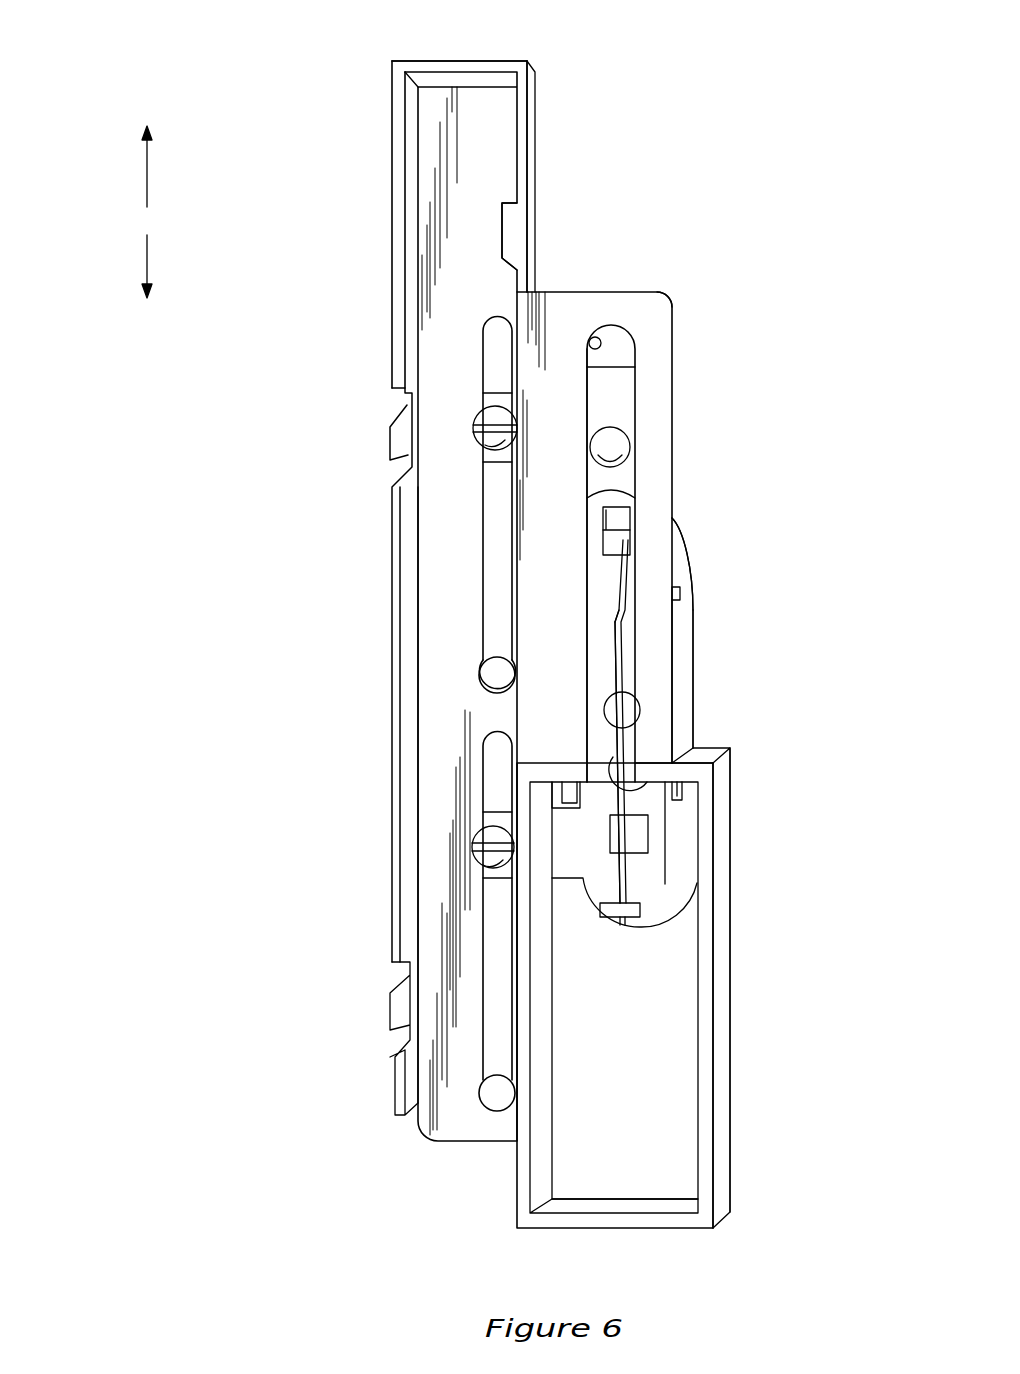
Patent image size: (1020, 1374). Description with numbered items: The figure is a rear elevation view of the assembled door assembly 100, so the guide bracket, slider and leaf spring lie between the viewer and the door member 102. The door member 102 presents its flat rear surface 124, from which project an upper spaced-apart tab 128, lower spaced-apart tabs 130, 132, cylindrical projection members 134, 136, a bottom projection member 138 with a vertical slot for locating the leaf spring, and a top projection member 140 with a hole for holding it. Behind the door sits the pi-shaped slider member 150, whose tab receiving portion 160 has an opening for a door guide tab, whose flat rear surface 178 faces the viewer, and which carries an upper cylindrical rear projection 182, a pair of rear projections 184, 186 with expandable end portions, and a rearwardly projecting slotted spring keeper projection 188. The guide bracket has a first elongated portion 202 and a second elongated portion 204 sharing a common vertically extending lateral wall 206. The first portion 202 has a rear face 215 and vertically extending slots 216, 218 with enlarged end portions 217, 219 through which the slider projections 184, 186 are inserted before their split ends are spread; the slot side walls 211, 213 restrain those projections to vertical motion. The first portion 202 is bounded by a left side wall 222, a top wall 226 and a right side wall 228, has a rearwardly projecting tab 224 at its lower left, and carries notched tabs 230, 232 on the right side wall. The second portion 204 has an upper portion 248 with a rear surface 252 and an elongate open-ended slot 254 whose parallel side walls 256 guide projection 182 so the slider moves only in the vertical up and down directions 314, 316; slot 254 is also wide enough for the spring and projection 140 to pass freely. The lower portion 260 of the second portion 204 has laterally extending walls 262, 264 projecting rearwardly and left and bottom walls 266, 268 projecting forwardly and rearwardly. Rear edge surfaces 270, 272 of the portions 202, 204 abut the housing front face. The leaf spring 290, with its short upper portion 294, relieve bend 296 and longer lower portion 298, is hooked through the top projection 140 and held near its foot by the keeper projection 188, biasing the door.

The door assembly 100 is at (262, 32).
The door member 102 is at (684, 512).
The flat rear surface 124 is at (686, 640).
The upper spaced apart tab 128 is at (690, 587).
The lower spaced apart tab 130 is at (592, 918).
The lower spaced apart tab 132 is at (694, 745).
The cylindrical projection member 134 is at (682, 594).
The cylindrical projection member 136 is at (686, 690).
The bottom projection member 138 is at (680, 785).
The top projection member 140 is at (628, 490).
The slider member 150 is at (623, 338).
The tab receiving portion 160 is at (552, 806).
The rear surface 178 is at (613, 407).
The upper cylindrical rear projection 182 is at (648, 433).
The rear projection 184 is at (480, 440).
The rear projection 186 is at (485, 845).
The slotted spring keeper projection 188 is at (645, 840).
The first elongated portion 202 is at (432, 108).
The second elongated portion 204 is at (665, 310).
The common vertically extending lateral wall 206 is at (540, 1062).
The slot side wall 211 is at (508, 572).
The slot side wall 213 is at (500, 1018).
The rear face 215 is at (457, 640).
The vertically extending slot 216 is at (505, 518).
The enlarged end portion 217 is at (500, 680).
The vertically extending slot 218 is at (500, 925).
The enlarged end portion 219 is at (485, 1095).
The left side wall 222 is at (522, 100).
The rearwardly projecting tab 224 is at (517, 222).
The top wall 226 is at (470, 67).
The right side wall 228 is at (395, 125).
The notched tab 230 is at (390, 420).
The notched tab 232 is at (392, 1003).
The upper portion 248 is at (660, 335).
The rear surface 252 is at (612, 447).
The elongate open ended slot 254 is at (620, 497).
The slot side wall 256 is at (591, 337).
The lower portion 260 is at (705, 855).
The laterally extending wall 262 is at (640, 712).
The laterally extending wall 264 is at (552, 778).
The left wall 266 is at (722, 1005).
The bottom wall 268 is at (620, 1225).
The rear edge surface 270 is at (400, 183).
The rear edge surface 272 is at (705, 930).
The leaf spring 290 is at (632, 620).
The short upper portion 294 is at (603, 540).
The relieve bend 296 is at (617, 610).
The longer lower portion 298 is at (606, 655).
The vertical up direction 314 is at (147, 193).
The vertical down direction 316 is at (147, 255).